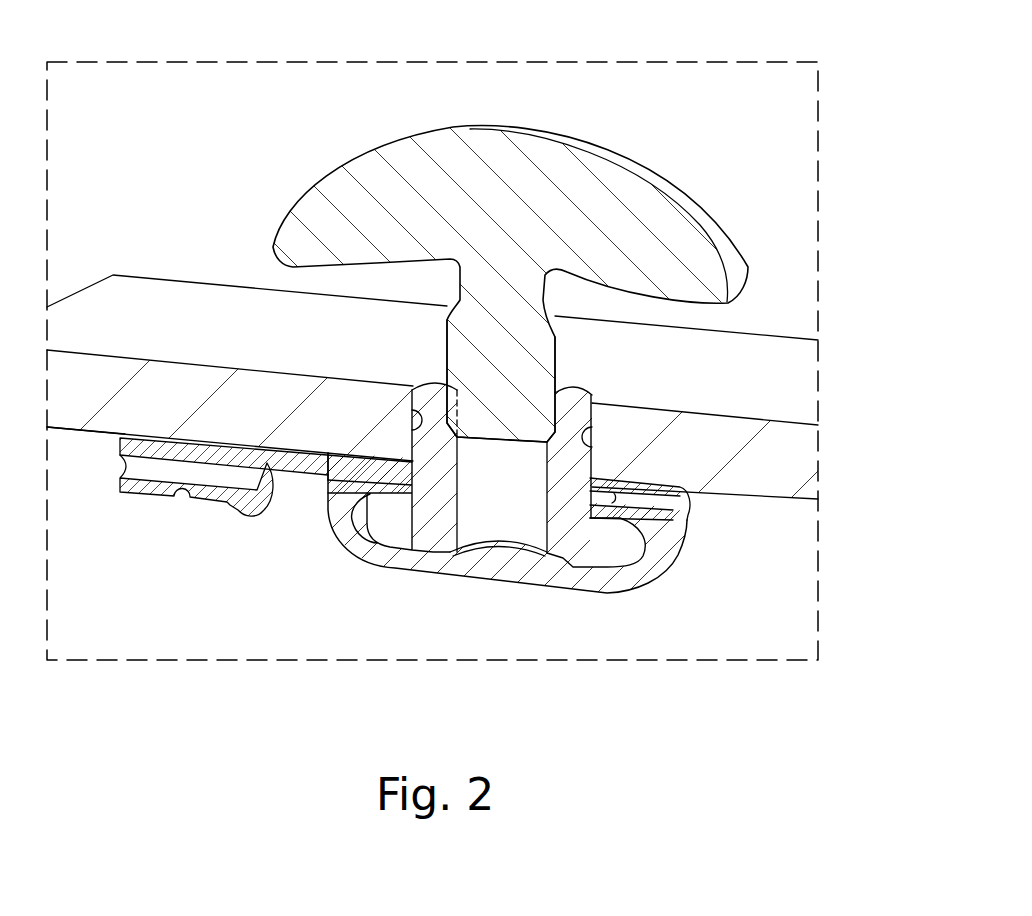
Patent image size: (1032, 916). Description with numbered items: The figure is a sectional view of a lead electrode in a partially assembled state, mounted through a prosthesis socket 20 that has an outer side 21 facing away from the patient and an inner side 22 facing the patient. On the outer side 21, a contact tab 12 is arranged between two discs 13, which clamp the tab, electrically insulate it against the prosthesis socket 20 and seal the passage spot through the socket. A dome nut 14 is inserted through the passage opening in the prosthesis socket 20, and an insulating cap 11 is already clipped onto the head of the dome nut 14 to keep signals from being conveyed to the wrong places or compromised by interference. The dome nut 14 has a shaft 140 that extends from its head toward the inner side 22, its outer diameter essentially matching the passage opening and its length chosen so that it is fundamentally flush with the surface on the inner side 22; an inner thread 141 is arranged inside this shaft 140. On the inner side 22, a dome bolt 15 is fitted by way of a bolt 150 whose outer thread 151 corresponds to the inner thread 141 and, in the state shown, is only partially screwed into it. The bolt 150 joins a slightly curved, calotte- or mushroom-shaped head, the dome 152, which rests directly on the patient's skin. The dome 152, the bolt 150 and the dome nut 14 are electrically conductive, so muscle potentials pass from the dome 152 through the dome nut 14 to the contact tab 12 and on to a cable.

The insulating cap 11 is at (516, 363).
The contact tab 12 is at (150, 493).
The discs 13 is at (322, 482).
The dome nut 14 is at (521, 363).
The shaft 140 is at (427, 508).
The inner thread 141 is at (487, 545).
The dome bolt 15 is at (531, 250).
The bolt 150 is at (520, 304).
The outer thread 151 is at (555, 353).
The dome 152 is at (628, 187).
The prosthesis socket 20 is at (790, 465).
The outer side 21 is at (100, 428).
The inner side 22 is at (145, 310).